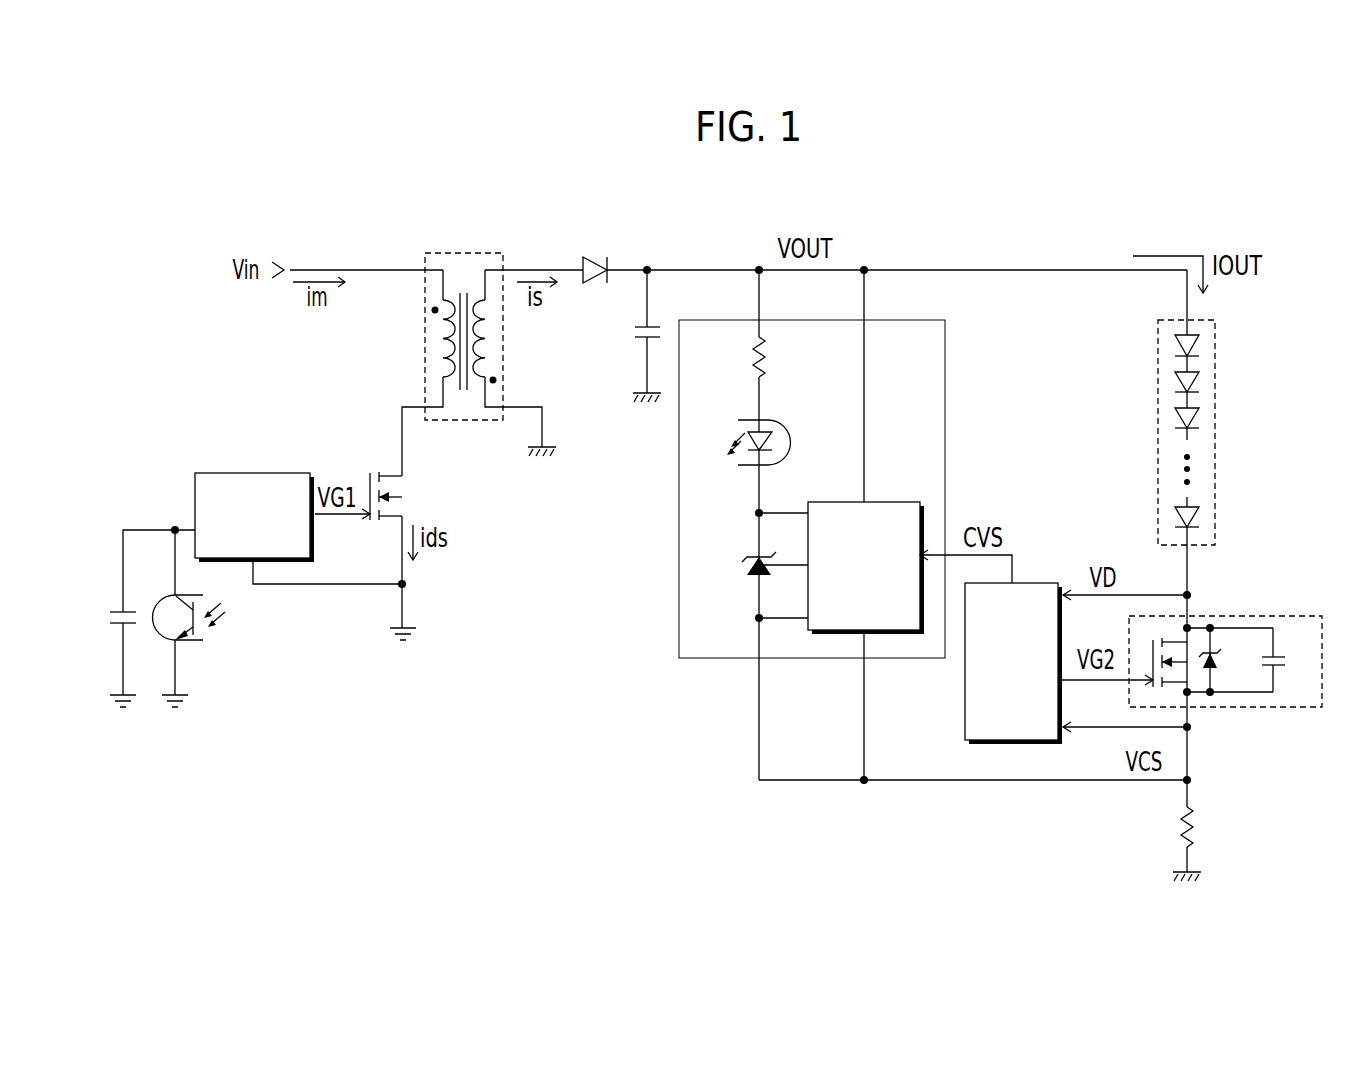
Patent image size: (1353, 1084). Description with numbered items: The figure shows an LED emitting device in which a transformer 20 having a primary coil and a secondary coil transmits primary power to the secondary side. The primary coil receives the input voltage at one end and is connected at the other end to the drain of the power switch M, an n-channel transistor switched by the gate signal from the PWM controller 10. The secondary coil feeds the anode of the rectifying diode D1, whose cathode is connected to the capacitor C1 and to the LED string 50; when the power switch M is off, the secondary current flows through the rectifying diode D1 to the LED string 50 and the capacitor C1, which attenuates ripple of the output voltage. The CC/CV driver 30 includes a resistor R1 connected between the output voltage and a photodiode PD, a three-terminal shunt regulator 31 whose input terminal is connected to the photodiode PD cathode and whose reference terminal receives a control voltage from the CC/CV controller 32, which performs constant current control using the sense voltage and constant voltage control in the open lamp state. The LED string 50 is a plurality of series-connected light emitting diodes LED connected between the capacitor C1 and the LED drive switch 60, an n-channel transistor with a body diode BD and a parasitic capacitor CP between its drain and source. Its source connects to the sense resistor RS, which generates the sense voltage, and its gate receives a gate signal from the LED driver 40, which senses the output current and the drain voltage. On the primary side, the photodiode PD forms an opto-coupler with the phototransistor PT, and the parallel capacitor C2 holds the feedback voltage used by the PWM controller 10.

The PWM controller 10 is at (260, 473).
The transformer 20 is at (483, 253).
The constant current/constant voltage (CC/CV) driver 30 is at (679, 540).
The shunt regulator 31 is at (747, 568).
The CC/CV controller 32 is at (893, 502).
The LED driver 40 is at (1028, 583).
The LED string 50 is at (1216, 438).
The LED drive switch 60 is at (1275, 614).
The capacitor C1 is at (633, 336).
The capacitor C2 is at (109, 656).
The rectifying diode D1 is at (596, 254).
The resistor R1 is at (744, 323).
The sense resistor RS is at (1199, 844).
The photodiode PD is at (745, 421).
The phototransistor PT is at (193, 618).
The power switch M is at (399, 556).
The light emitting diode LED is at (1199, 347).
The body diode BD is at (1224, 660).
The parasitic capacitor CP is at (1287, 660).